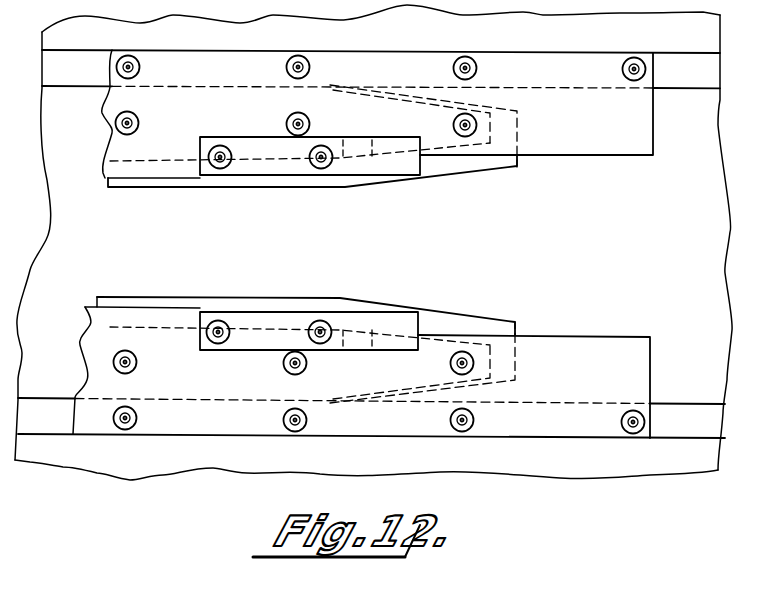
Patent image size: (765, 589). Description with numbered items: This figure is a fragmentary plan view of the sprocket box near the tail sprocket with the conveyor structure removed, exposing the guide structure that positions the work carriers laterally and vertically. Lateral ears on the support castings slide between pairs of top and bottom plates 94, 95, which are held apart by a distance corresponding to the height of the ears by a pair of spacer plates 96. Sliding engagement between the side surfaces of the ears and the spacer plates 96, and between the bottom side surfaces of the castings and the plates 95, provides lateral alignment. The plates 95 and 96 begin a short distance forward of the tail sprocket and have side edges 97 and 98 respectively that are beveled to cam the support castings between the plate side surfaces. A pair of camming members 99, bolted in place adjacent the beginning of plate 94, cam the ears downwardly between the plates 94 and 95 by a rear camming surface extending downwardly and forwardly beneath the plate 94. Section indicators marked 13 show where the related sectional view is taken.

The top plate 94 is at (600, 157).
The bottom plate 95 is at (197, 189).
The spacer plate 96 is at (277, 158).
The beveled side edge of plate 95 97 is at (467, 177).
The beveled side edge of plate 96 98 is at (443, 148).
The camming member 99 is at (270, 137).
The section line 13- 13 is at (170, 240).